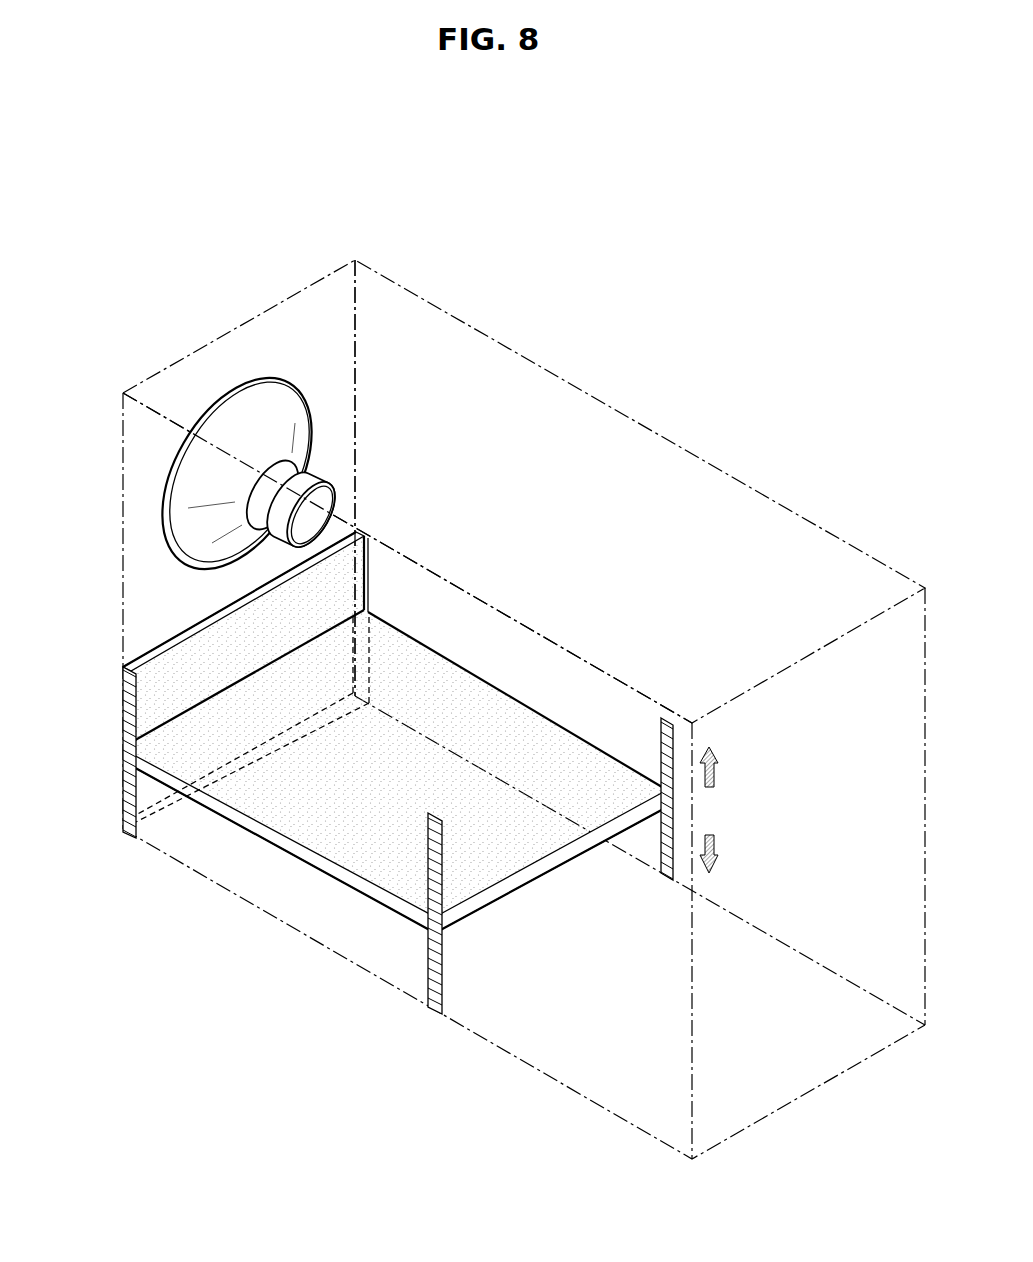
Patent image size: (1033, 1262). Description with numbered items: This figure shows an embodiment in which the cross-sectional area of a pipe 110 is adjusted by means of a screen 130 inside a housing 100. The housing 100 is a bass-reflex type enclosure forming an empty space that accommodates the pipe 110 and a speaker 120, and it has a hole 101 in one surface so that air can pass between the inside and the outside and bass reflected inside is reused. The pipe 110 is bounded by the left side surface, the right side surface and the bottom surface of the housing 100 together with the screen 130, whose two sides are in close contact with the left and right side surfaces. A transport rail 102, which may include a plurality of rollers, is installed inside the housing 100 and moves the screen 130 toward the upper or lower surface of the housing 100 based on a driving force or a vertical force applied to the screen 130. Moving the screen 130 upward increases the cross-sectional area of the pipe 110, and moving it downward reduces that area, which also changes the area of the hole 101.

The housing 100 is at (486, 687).
The pipe 110 is at (250, 864).
The speaker 120 is at (243, 410).
The screen 130 is at (352, 855).
The hole 101 is at (250, 752).
The transport rail 102 is at (432, 967).